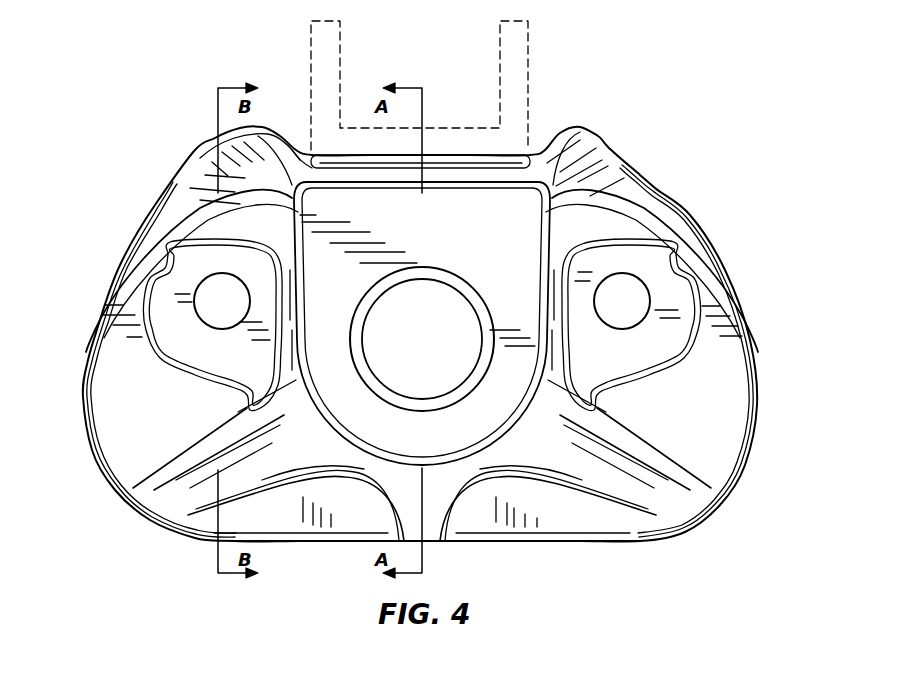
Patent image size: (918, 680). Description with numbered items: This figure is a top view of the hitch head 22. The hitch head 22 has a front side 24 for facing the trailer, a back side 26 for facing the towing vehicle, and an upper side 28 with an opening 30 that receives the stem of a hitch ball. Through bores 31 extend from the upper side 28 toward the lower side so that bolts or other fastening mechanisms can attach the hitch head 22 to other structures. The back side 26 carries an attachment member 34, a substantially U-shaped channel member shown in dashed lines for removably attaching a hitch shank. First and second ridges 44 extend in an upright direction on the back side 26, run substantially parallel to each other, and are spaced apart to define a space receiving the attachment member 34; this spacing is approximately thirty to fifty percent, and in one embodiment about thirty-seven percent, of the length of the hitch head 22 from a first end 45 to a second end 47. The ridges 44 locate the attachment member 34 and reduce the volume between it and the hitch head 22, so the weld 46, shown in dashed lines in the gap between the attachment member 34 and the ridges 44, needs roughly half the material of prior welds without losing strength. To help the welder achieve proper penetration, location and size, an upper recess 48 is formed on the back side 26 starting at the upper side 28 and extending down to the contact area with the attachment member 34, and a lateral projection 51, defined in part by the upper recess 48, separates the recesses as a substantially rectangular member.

The hitch head 22 is at (717, 396).
The front side 24 is at (520, 542).
The back side 26 is at (630, 158).
The upper side 28 is at (545, 198).
The opening 30 is at (466, 318).
The through bores 31 is at (197, 288).
The attachment member 34 is at (528, 44).
The ridges 44 is at (258, 130).
The first end 45 is at (87, 428).
The weld 46 is at (292, 148).
The second end 47 is at (757, 427).
The upper recess 48 is at (283, 185).
The lateral projection 51 is at (527, 152).